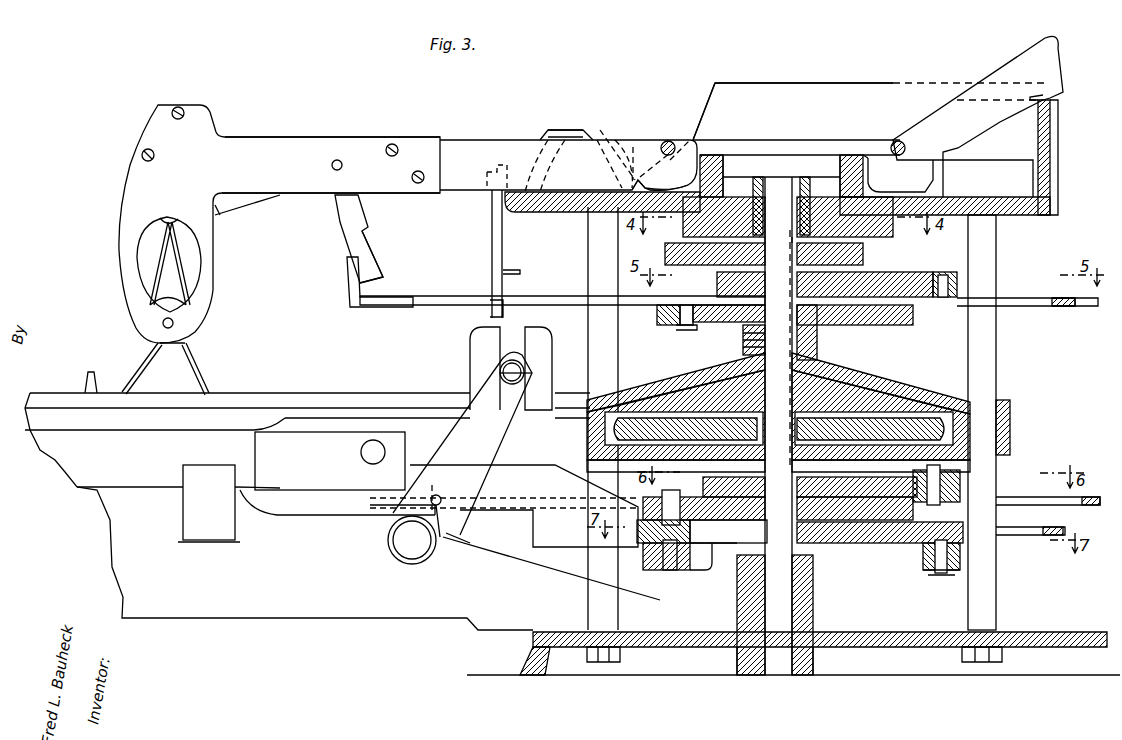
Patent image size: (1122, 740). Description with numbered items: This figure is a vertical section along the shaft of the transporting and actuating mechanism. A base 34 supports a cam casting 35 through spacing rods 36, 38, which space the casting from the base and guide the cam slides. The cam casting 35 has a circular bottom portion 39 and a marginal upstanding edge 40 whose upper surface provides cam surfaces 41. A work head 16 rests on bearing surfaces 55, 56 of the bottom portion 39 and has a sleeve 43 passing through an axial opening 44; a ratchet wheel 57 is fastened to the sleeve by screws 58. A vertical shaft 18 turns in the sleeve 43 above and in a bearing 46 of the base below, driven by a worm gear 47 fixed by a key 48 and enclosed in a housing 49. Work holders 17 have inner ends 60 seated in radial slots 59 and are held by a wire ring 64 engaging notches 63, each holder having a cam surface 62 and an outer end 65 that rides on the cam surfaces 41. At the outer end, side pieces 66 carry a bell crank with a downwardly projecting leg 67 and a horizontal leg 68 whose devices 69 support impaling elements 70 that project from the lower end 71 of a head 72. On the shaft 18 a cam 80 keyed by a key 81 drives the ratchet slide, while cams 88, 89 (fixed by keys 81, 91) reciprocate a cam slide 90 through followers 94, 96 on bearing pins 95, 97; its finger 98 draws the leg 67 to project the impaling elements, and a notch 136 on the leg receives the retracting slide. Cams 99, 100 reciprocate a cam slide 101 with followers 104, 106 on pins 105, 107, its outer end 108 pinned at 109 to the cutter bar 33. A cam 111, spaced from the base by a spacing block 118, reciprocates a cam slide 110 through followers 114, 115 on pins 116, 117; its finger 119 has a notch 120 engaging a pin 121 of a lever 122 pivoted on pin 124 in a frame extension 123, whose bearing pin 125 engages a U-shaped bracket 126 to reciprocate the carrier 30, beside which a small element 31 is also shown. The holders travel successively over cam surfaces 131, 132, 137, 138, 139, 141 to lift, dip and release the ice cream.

The work head 16 is at (845, 152).
The work holder 17 is at (458, 150).
The vertical shaft 18 is at (772, 660).
The carrier 30 is at (318, 393).
The stop 31 is at (84, 382).
The cutter bar 33 is at (125, 470).
The base 34 is at (868, 650).
The cam casting 35 is at (786, 108).
The spacing rod 36 is at (990, 268).
The spacing rod 38 is at (592, 250).
The circular bottom portion 39 is at (1040, 218).
The marginal upstanding edge 40 is at (1052, 160).
The cam surfaces 41 is at (935, 100).
The sleeve 43 is at (760, 178).
The axial opening 44 is at (808, 178).
The bearing 46 is at (803, 650).
The worm gear 47 is at (875, 430).
The key 48 is at (825, 400).
The housing 49 is at (880, 392).
The bearing surface 55 is at (950, 192).
The bearing surface 56 is at (845, 150).
The ratchet wheel 57 is at (880, 232).
The screws 58 is at (755, 175).
The radial slots 59 is at (870, 160).
The inner end 60 is at (650, 152).
The cam surface 62 is at (930, 185).
The notch 63 is at (900, 140).
The circular wire ring 64 is at (669, 140).
The outer end 65 is at (152, 127).
The side pieces 66 is at (255, 140).
The downwardly projecting leg 67 is at (348, 222).
The horizontally disposed leg 68 is at (232, 205).
The devices 69 is at (150, 228).
The impaling elements 70 is at (155, 278).
The lower end 71 is at (145, 323).
The head 72 is at (130, 205).
The cam 80 is at (864, 258).
The key 81 is at (790, 260).
The cam 88 is at (900, 275).
The cam 89 is at (915, 322).
The cam slide 90 is at (1066, 308).
The key 91 is at (790, 325).
The cam follower 94 is at (944, 272).
The bearing pin 95 is at (957, 290).
The cam follower 96 is at (658, 325).
The bearing pin 97 is at (684, 328).
The finger 98 is at (350, 280).
The cam 99 is at (855, 487).
The cam 100 is at (913, 516).
The cam slide 101 is at (1092, 496).
The cam follower 104 is at (962, 493).
The bearing pin 105 is at (1002, 456).
The cam follower 106 is at (668, 512).
The bearing pin 107 is at (700, 497).
The outer end 108 is at (372, 516).
The pin 109 is at (361, 455).
The cam slide 110 is at (1057, 537).
The cam 111 is at (885, 548).
The cam follower 114 is at (955, 578).
The cam follower 115 is at (688, 572).
The bearing pin 116 is at (935, 565).
The bearing pin 117 is at (668, 562).
The spacing block 118 is at (813, 595).
The finger 119 is at (498, 488).
The notch 120 is at (462, 443).
The pin 121 is at (448, 540).
The lever 122 is at (497, 420).
The extension 123 is at (212, 527).
The pin 124 is at (392, 555).
The bearing pin 125 is at (515, 372).
The U-shaped bracket 126 is at (475, 356).
The cam surface 131 is at (538, 132).
The upper cam surface 132 is at (572, 128).
The notch 136 is at (368, 226).
The cam surface 137 is at (622, 135).
The cam surface 138 is at (703, 105).
The cam surface 139 is at (743, 85).
The cam surface 141 is at (495, 215).